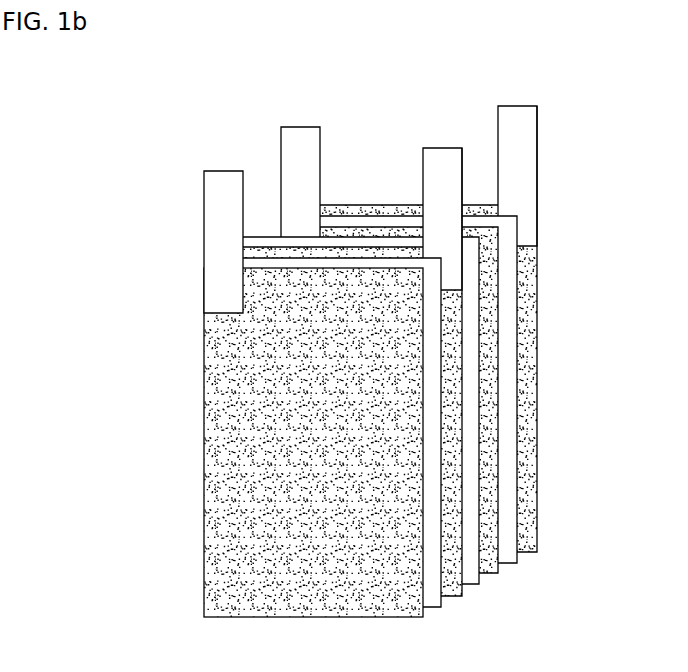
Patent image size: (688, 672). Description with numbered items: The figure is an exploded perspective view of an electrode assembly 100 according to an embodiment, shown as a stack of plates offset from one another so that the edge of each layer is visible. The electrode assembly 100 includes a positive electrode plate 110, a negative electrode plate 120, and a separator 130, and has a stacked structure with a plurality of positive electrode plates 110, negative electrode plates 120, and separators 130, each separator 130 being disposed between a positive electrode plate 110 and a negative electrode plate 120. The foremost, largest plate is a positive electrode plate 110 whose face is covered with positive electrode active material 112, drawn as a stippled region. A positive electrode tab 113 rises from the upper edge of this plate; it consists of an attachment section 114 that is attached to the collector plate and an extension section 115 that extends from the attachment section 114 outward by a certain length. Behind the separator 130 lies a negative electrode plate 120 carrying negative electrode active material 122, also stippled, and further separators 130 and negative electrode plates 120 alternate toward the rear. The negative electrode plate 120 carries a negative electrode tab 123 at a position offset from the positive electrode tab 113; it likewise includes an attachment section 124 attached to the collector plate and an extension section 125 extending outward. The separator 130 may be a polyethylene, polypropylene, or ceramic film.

The electrode assembly 100 is at (375, 330).
The positive electrode plate 110 is at (275, 442).
The positive electrode active material 112 is at (207, 435).
The positive electrode tab 113 is at (170, 242).
The attachment section 114 is at (210, 278).
The extension section 115 is at (210, 216).
The negative electrode plate 120 is at (423, 351).
The negative electrode active material 122 is at (461, 404).
The negative electrode tab 123 is at (538, 198).
The attachment section 124 is at (452, 268).
The extension section 125 is at (450, 182).
The separator 130 is at (446, 455).